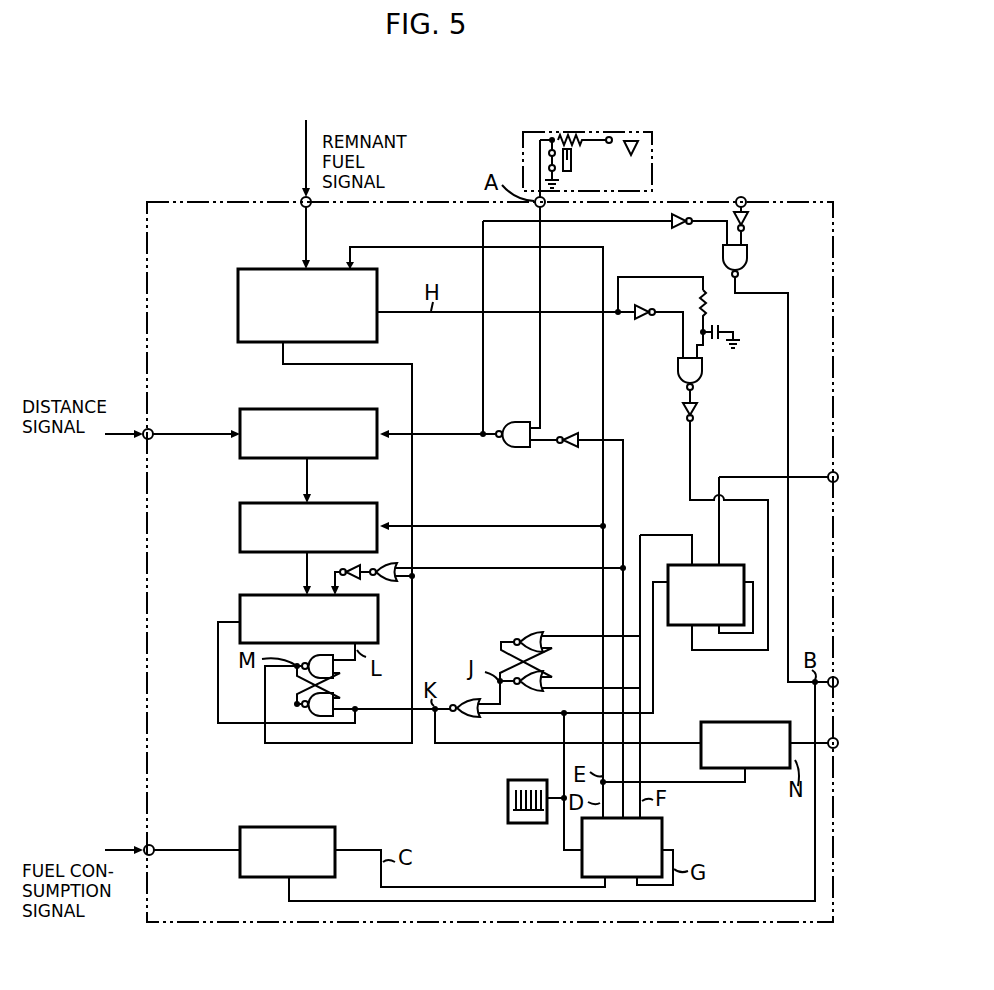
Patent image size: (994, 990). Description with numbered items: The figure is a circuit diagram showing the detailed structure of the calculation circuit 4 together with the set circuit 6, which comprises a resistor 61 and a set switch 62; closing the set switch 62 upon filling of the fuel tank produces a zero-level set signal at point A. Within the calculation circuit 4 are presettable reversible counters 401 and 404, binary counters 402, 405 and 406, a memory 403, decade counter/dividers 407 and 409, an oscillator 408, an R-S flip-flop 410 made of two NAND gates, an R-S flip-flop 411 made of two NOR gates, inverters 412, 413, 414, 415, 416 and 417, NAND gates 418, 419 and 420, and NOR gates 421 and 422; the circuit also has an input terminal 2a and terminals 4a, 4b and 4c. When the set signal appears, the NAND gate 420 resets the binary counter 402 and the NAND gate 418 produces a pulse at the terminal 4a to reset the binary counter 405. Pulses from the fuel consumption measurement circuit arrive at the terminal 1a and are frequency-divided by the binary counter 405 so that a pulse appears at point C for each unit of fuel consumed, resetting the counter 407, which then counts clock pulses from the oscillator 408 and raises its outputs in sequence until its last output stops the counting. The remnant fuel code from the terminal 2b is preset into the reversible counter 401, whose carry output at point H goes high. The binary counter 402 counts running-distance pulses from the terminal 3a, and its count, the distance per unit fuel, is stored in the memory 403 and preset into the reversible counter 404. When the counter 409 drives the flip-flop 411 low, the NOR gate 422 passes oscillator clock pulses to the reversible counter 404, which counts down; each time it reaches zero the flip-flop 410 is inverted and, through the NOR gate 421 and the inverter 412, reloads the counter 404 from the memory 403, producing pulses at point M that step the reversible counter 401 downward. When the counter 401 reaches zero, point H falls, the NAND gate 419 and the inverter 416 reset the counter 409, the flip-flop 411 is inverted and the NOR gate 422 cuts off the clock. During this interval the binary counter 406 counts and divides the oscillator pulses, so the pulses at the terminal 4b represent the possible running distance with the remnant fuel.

The calculation circuit 4 is at (853, 228).
The set circuit 6 is at (635, 131).
The resistor 61 is at (569, 136).
The set switch 62 is at (572, 163).
The terminal 1a is at (145, 846).
The input terminal 2a is at (741, 196).
The output terminal of the remnant fuel measurement circuit 2b is at (305, 196).
The terminal of the running distance measurement circuit 3a is at (143, 437).
The terminal 4a is at (839, 683).
The terminal 4b is at (839, 744).
The output terminal 4c is at (839, 478).
The presettable reversible counter 401 is at (238, 296).
The binary counter 402 is at (286, 409).
The memory 403 is at (240, 528).
The presettable reversible counter 404 is at (240, 597).
The binary counter 405 is at (284, 827).
The binary counter 406 is at (757, 722).
The decade counter/divider 407 is at (664, 836).
The oscillator 408 is at (508, 805).
The decade counter/divider 409 is at (680, 628).
The R-S flip-flop 410 is at (292, 686).
The R-S flip-flop 411 is at (540, 656).
The inverter 412 is at (396, 582).
The inverter 413 is at (563, 449).
The inverter 414 is at (643, 320).
The inverter 415 is at (691, 226).
The inverter 416 is at (698, 414).
The inverter 417 is at (747, 225).
The NAND gate 418 is at (749, 263).
The NAND gate 419 is at (703, 374).
The NAND gate 420 is at (502, 449).
The NOR gate 421 is at (380, 564).
The NOR gate 422 is at (468, 718).